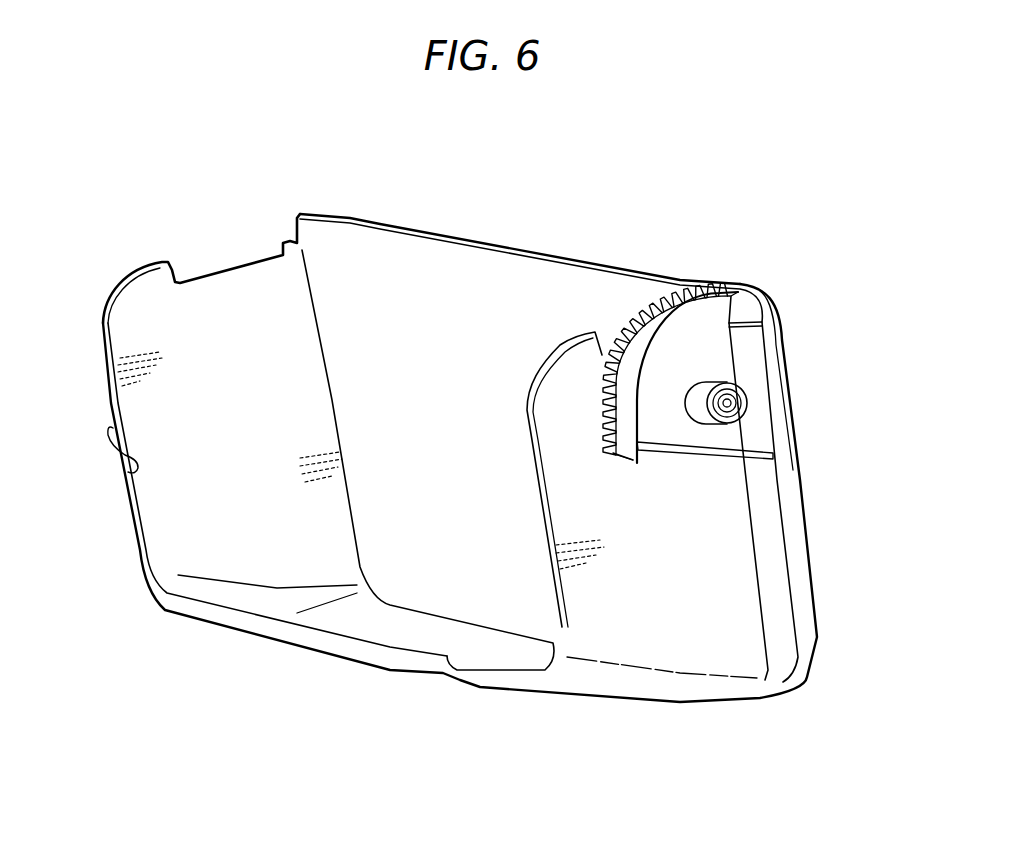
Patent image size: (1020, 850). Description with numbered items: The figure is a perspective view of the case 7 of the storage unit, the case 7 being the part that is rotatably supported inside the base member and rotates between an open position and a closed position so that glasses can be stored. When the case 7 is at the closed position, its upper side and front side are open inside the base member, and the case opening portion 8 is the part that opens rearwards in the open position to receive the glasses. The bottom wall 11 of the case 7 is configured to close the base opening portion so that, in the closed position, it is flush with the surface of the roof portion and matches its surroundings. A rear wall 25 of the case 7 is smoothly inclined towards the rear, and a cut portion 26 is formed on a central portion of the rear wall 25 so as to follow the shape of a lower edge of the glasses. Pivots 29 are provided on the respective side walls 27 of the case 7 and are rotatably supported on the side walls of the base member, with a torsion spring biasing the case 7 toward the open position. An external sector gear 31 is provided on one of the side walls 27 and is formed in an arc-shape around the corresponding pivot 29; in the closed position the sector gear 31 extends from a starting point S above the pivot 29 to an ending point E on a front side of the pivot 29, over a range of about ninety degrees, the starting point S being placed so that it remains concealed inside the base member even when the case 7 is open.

The case 7 is at (787, 355).
The case opening portion 8 is at (132, 476).
The bottom wall 11 is at (475, 313).
The rear wall 25 is at (250, 632).
The cut portion 26 is at (430, 675).
The side walls 27 is at (210, 493).
The pivots 29 is at (735, 404).
The external sector gear 31 is at (660, 307).
The ending point E is at (747, 283).
The starting point S is at (613, 453).